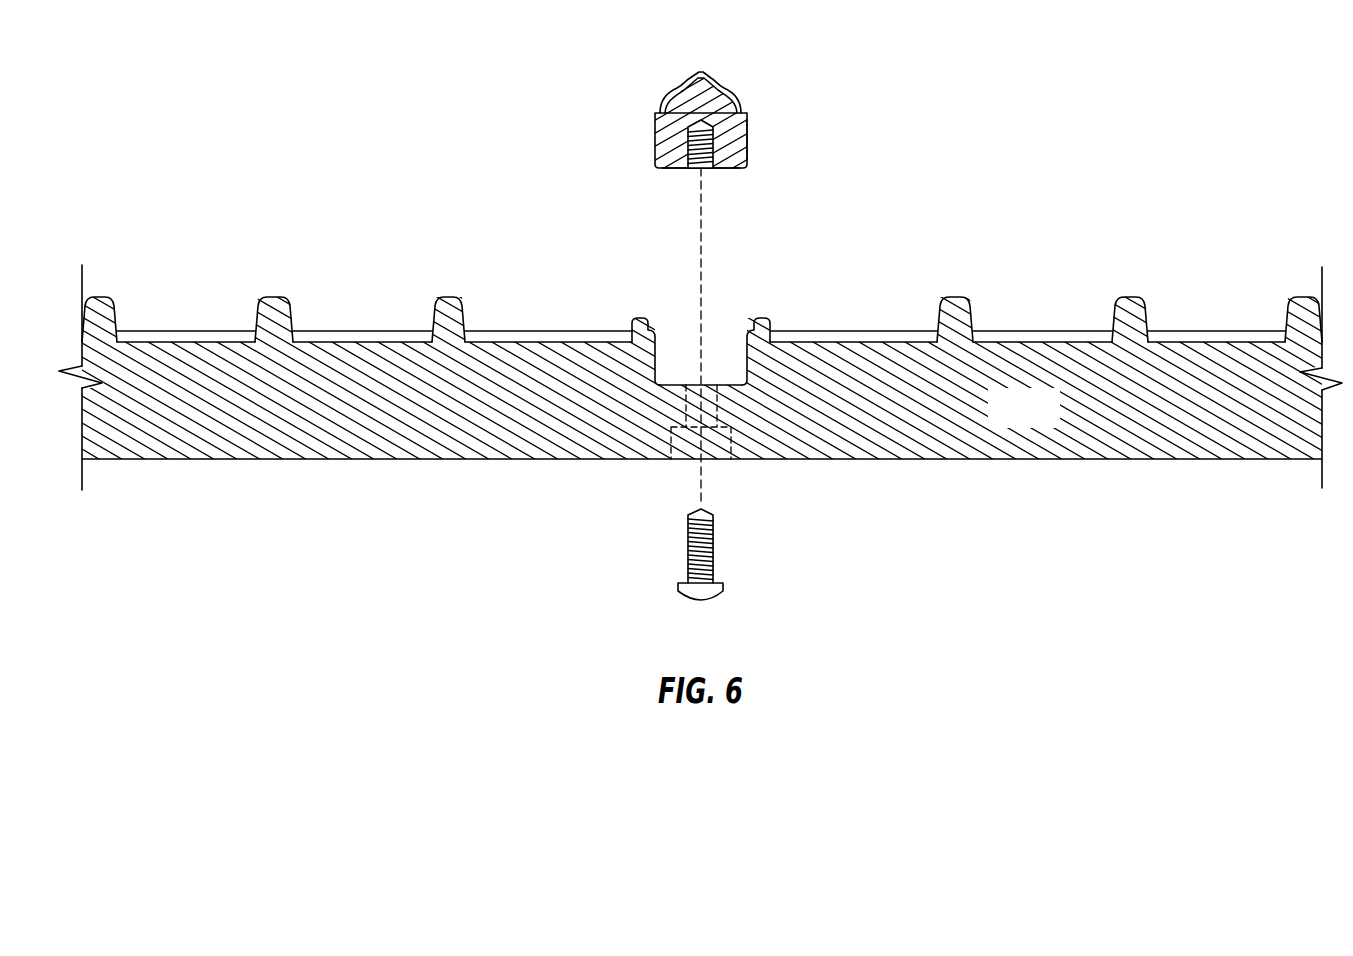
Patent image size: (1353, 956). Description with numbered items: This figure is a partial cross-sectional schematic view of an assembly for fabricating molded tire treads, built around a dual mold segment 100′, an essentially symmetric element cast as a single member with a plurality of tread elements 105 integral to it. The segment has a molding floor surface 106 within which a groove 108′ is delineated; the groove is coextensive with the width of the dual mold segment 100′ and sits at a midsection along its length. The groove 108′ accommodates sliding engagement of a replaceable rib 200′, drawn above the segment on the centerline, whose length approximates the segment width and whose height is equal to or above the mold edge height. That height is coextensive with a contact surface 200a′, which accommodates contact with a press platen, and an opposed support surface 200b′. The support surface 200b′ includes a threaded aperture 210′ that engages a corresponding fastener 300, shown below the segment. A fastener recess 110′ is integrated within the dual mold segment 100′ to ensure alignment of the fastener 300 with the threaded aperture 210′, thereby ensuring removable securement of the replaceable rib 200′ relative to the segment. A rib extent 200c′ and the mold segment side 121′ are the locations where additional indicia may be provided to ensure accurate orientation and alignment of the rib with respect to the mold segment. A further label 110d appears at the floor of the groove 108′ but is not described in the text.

The dual mold segment 100′ is at (322, 237).
The tread elements 105 is at (1305, 296).
The molding floor surface 106 is at (870, 331).
The groove 108′ is at (655, 360).
The channel bottom 110d is at (711, 382).
The fastener recess 110′ is at (728, 443).
The mold segment side 121′ is at (1053, 421).
The replaceable rib 200′ is at (707, 120).
The contact surface 200a′ is at (702, 70).
The support surface 200b′ is at (727, 170).
The rib extent 200c′ is at (737, 130).
The threaded aperture 210′ is at (695, 170).
The fastener 300 is at (688, 552).